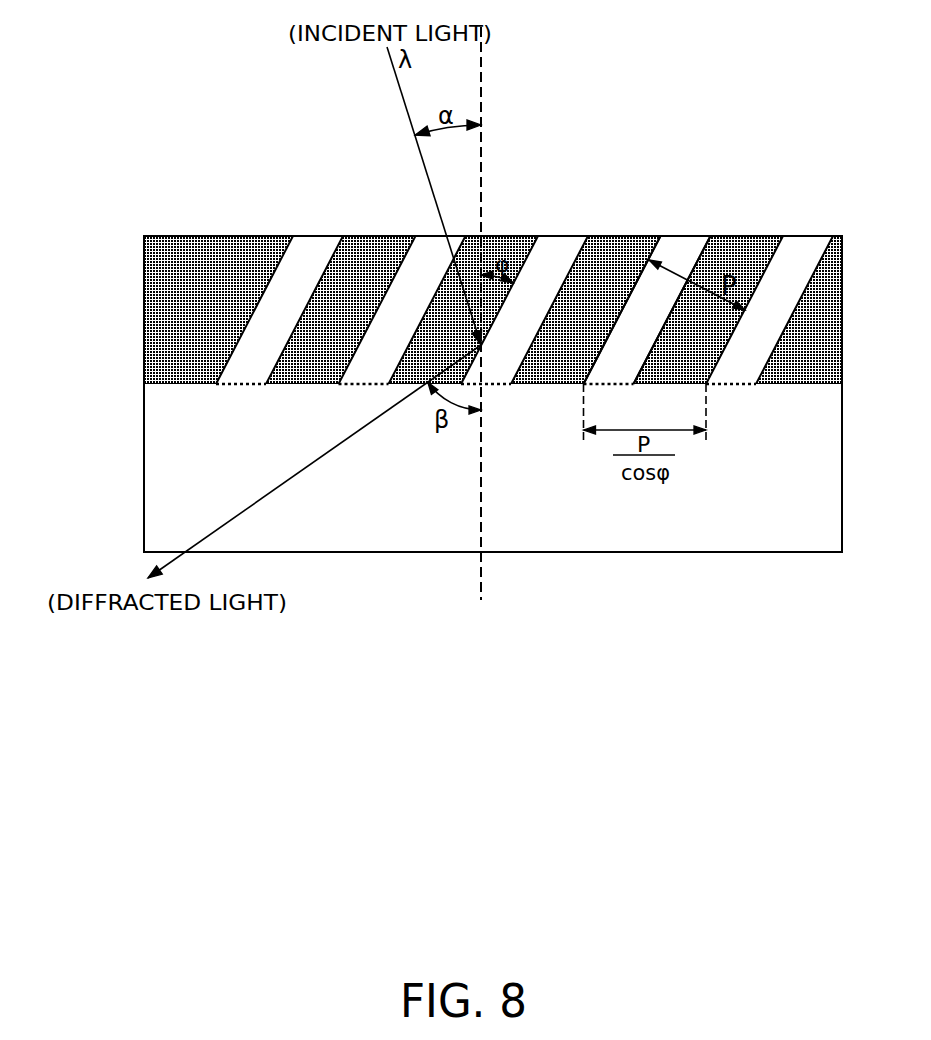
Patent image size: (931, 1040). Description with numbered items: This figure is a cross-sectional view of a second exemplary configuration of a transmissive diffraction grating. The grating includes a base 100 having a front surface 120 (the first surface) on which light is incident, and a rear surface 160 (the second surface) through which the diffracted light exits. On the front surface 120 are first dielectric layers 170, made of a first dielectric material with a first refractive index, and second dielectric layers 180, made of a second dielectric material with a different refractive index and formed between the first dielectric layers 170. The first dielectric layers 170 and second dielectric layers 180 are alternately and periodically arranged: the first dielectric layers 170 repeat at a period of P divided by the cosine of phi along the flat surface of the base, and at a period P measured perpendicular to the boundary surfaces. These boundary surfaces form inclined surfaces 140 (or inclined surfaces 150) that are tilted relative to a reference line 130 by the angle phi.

The base 100 is at (155, 440).
The front surface 120 is at (462, 287).
The reference line 130 is at (481, 55).
The inclined surfaces 140 is at (529, 237).
The inclined surfaces 150 is at (599, 252).
The rear surface 160 is at (332, 553).
The first dielectric layers 170 is at (690, 250).
The second dielectric layers 180 is at (760, 250).